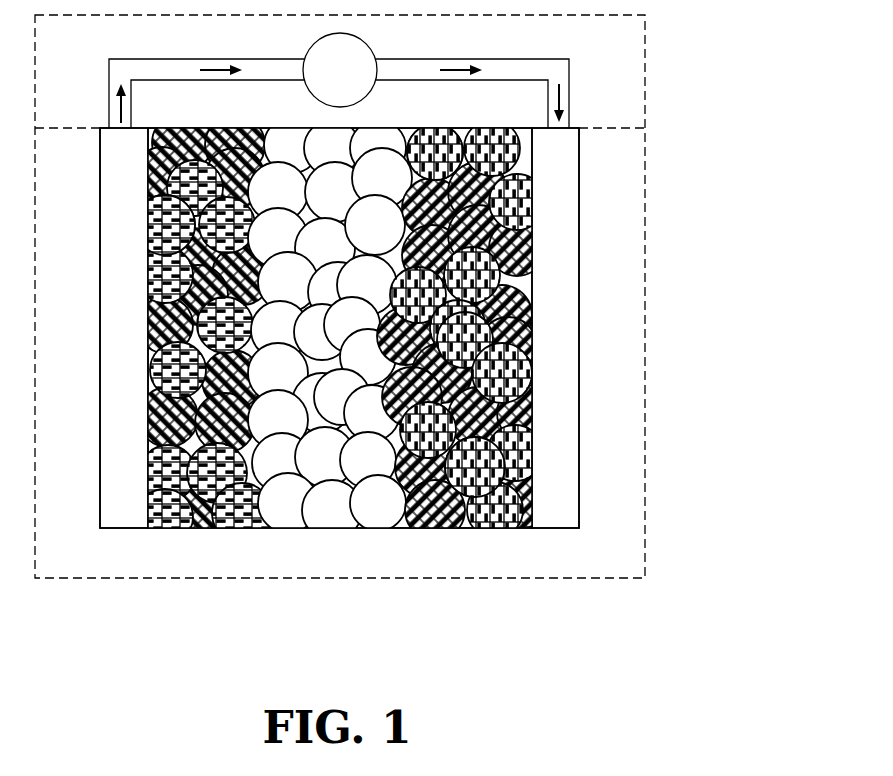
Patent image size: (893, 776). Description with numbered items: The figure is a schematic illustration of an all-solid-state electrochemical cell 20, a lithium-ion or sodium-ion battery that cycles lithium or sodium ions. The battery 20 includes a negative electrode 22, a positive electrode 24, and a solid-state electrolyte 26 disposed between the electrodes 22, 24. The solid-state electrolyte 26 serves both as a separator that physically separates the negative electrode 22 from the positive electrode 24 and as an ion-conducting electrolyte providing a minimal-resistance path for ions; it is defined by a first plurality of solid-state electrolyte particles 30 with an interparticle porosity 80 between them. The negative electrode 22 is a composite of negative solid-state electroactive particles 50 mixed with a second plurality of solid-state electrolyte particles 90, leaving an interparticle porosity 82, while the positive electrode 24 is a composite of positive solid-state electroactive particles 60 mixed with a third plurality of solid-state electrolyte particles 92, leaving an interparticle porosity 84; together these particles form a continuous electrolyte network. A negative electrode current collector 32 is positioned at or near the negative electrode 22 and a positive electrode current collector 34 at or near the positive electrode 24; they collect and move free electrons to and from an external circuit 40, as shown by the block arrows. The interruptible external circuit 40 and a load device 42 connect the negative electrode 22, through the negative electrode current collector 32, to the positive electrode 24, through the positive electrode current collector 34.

The all-solid-state electrochemical cell 20 is at (658, 203).
The negative electrode 22 is at (160, 371).
The positive electrode 24 is at (504, 361).
The solid-state electrolyte 26 is at (340, 379).
The first plurality of solid-state electrolyte particles 30 is at (348, 518).
The negative electrode current collector 32 is at (113, 472).
The positive electrode current collector 34 is at (567, 191).
The external circuit 40 is at (657, 84).
The load device 42 is at (340, 70).
The negative solid-state electroactive particles 50 is at (163, 447).
The positive solid-state electroactive particles 60 is at (532, 327).
The interparticle porosity 80 is at (405, 135).
The interparticle porosity 82 is at (152, 362).
The interparticle porosity 84 is at (463, 493).
The second plurality of solid-state electrolyte particles 90 is at (162, 219).
The third plurality of solid-state electrolyte particles 92 is at (525, 462).